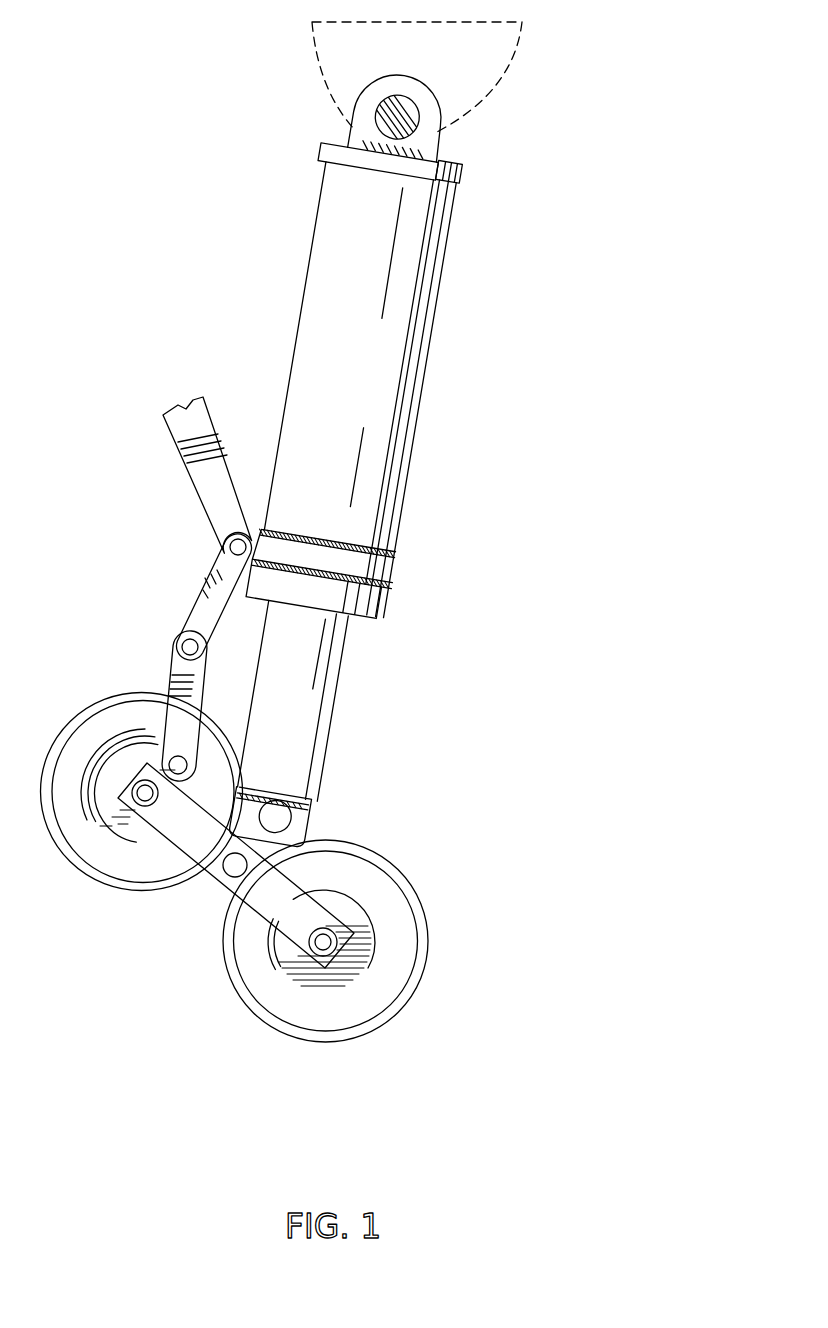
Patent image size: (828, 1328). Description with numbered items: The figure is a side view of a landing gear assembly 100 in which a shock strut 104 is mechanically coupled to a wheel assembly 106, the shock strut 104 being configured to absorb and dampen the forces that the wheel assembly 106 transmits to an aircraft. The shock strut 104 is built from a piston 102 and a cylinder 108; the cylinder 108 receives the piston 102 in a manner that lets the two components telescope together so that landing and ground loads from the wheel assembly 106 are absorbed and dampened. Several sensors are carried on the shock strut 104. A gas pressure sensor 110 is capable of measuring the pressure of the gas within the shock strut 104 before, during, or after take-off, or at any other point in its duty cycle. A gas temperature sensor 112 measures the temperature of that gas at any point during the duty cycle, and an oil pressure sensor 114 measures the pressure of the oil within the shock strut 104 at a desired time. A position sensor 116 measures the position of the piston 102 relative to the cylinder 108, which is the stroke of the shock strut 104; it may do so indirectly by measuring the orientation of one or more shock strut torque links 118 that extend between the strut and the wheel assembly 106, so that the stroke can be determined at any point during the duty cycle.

The landing gear assembly 100 is at (578, 162).
The piston 102 is at (330, 745).
The shock strut 104 is at (440, 263).
The wheel assembly 106 is at (410, 900).
The cylinder 108 is at (375, 443).
The gas pressure sensor 110 is at (320, 200).
The gas temperature sensor 112 is at (330, 250).
The oil pressure sensor 114 is at (312, 322).
The position sensor 116 is at (350, 627).
The shock strut torque links 118 is at (180, 640).